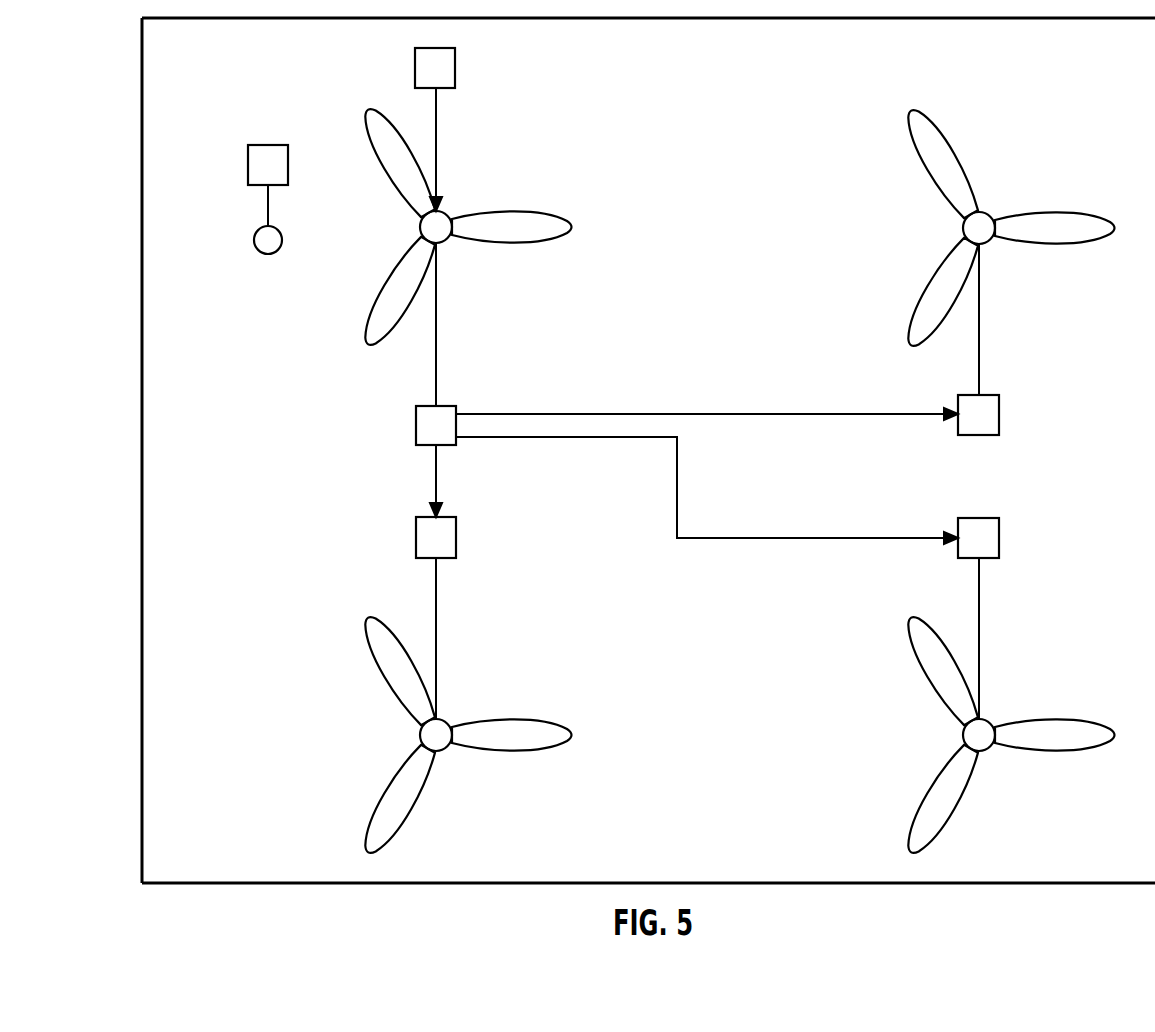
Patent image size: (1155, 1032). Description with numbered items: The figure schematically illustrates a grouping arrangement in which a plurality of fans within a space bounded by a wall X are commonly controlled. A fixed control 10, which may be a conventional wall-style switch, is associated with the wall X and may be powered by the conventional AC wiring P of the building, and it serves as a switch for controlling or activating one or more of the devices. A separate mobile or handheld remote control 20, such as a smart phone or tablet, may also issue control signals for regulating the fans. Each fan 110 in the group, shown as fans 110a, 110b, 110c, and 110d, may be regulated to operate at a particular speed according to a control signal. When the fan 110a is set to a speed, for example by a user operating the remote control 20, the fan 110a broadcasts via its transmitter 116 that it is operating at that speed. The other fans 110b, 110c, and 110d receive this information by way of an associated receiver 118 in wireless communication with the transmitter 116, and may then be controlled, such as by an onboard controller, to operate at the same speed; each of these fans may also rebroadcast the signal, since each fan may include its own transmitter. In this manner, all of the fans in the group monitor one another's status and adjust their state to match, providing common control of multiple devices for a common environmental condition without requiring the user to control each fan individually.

The wall X is at (142, 130).
The control 10 is at (371, 62).
The fan 110 is at (415, 68).
The fan 110a is at (390, 283).
The fan 110b is at (1052, 212).
The fan 110c is at (388, 787).
The fan 110d is at (1050, 718).
The transmitter 116 is at (416, 425).
The receiver 118 is at (416, 537).
The remote control 20 is at (268, 145).
The AC wiring P is at (268, 254).